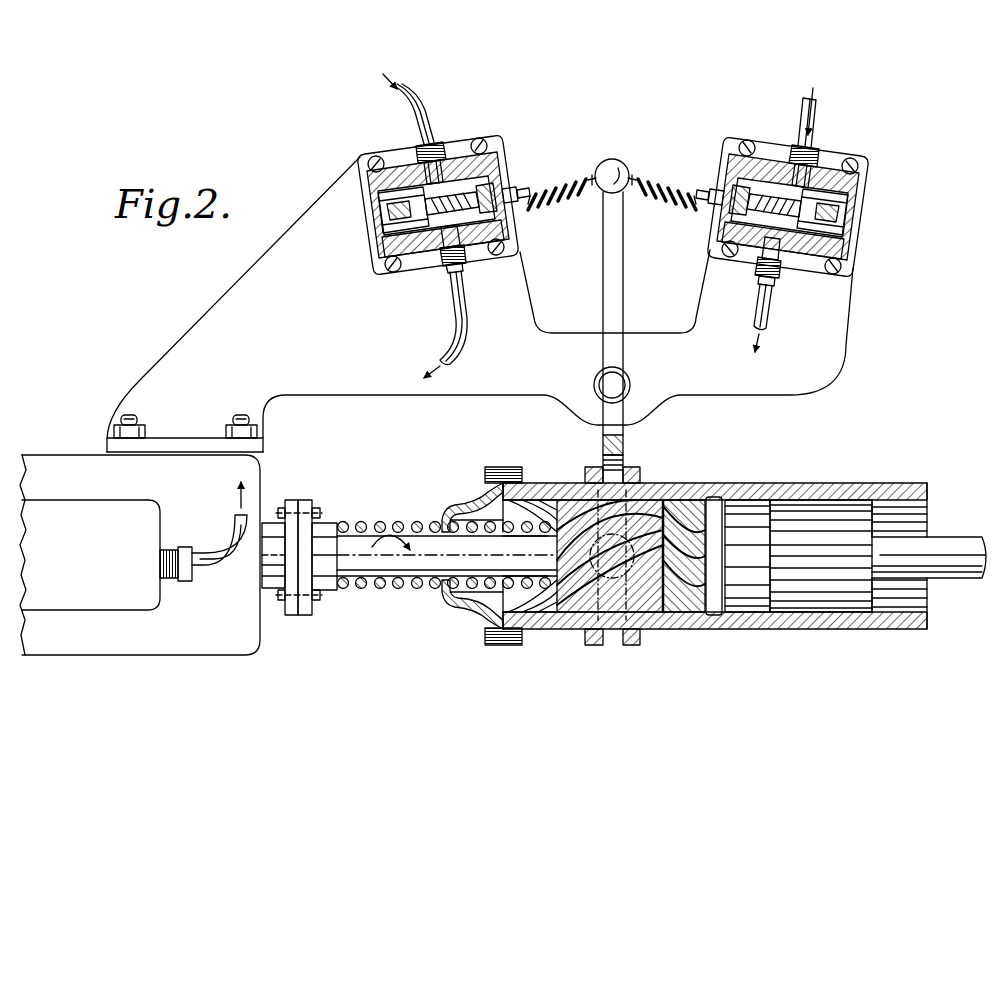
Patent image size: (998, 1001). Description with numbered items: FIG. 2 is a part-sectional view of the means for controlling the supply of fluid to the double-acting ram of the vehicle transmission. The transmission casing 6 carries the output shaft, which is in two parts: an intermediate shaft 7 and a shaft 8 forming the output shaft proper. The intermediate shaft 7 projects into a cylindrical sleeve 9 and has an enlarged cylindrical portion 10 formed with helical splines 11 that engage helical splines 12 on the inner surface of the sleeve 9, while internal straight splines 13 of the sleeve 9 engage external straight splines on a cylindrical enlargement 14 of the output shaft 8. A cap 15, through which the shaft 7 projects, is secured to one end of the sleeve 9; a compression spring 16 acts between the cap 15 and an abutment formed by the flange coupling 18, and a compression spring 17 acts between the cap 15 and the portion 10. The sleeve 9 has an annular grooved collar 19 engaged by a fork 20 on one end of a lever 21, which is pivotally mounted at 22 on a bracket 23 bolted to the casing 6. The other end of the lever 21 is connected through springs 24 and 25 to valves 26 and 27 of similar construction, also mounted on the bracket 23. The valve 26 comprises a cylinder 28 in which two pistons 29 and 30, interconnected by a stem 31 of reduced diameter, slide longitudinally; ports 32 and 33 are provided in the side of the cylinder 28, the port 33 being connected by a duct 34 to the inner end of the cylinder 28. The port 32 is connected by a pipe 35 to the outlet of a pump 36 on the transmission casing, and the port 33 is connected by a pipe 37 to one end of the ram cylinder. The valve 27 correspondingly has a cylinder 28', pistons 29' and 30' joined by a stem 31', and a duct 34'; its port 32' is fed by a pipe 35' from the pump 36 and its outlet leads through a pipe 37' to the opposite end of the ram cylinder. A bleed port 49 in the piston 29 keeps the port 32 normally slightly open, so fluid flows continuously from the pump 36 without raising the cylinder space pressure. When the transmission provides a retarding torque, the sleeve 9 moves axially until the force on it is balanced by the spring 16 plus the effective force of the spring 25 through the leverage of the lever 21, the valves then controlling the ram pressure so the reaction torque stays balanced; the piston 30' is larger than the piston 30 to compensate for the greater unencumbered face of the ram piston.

The casing 6 is at (45, 462).
The intermediate shaft 7 is at (430, 560).
The output shaft 8 is at (944, 540).
The cylindrical sleeve 9 is at (782, 492).
The enlarged cylindrical portion 10 is at (580, 614).
The helical splines 11 is at (660, 614).
The helical splines 12 is at (552, 614).
The internal straight splines 13 is at (740, 614).
The cylindrical enlargement 14 is at (830, 614).
The cap 15 is at (462, 505).
The compression spring 16 is at (375, 531).
The compression spring 17 is at (488, 520).
The flange coupling 18 is at (322, 524).
The annular grooved collar 19 is at (600, 644).
The fork 20 is at (625, 465).
The lever 21 is at (620, 302).
The pivot 22 is at (620, 382).
The bracket 23 is at (246, 289).
The spring 24 is at (582, 196).
The spring 25 is at (632, 196).
The valve 26 is at (458, 150).
The valve 27 is at (830, 163).
The cylinder 28 is at (415, 205).
The valve body 28' is at (814, 207).
The piston 29 is at (518, 183).
The adjusting plug 29' is at (716, 180).
The piston 30 is at (377, 216).
The piston 30' is at (852, 219).
The stem 31 is at (481, 176).
The piston spring 31' is at (831, 193).
The port 32 is at (442, 145).
The port 32' is at (823, 153).
The port 33 is at (446, 262).
The duct 34 is at (417, 247).
The cover plate 34' is at (811, 249).
The pipe 35 is at (310, 319).
The pipe 35' is at (786, 118).
The pump 36 is at (88, 508).
The pipe 37 is at (466, 324).
The pipe 37' is at (787, 294).
The bleed port 49 is at (517, 208).